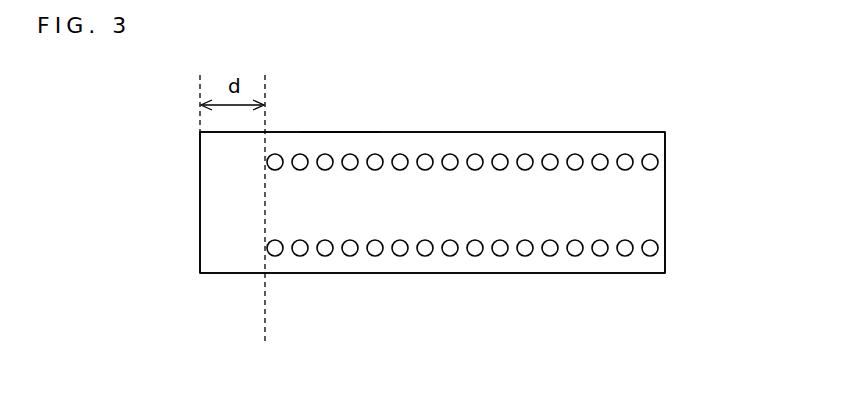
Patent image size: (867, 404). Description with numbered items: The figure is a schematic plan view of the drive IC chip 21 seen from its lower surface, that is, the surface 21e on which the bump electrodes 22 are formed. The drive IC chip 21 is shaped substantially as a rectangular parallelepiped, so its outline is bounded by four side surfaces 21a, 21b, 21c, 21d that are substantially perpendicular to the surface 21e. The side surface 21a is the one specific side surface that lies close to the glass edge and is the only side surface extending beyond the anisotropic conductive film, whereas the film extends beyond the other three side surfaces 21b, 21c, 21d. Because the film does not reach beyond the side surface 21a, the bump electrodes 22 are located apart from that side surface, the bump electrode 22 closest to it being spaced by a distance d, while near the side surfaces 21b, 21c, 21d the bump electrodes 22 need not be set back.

The drive IC chip 21 is at (705, 130).
The side surface 21a is at (200, 205).
The side surface 21b is at (392, 275).
The side surface 21c is at (457, 132).
The side surface 21d is at (665, 208).
The surface 21e is at (337, 140).
The bump electrodes 22 is at (577, 152).